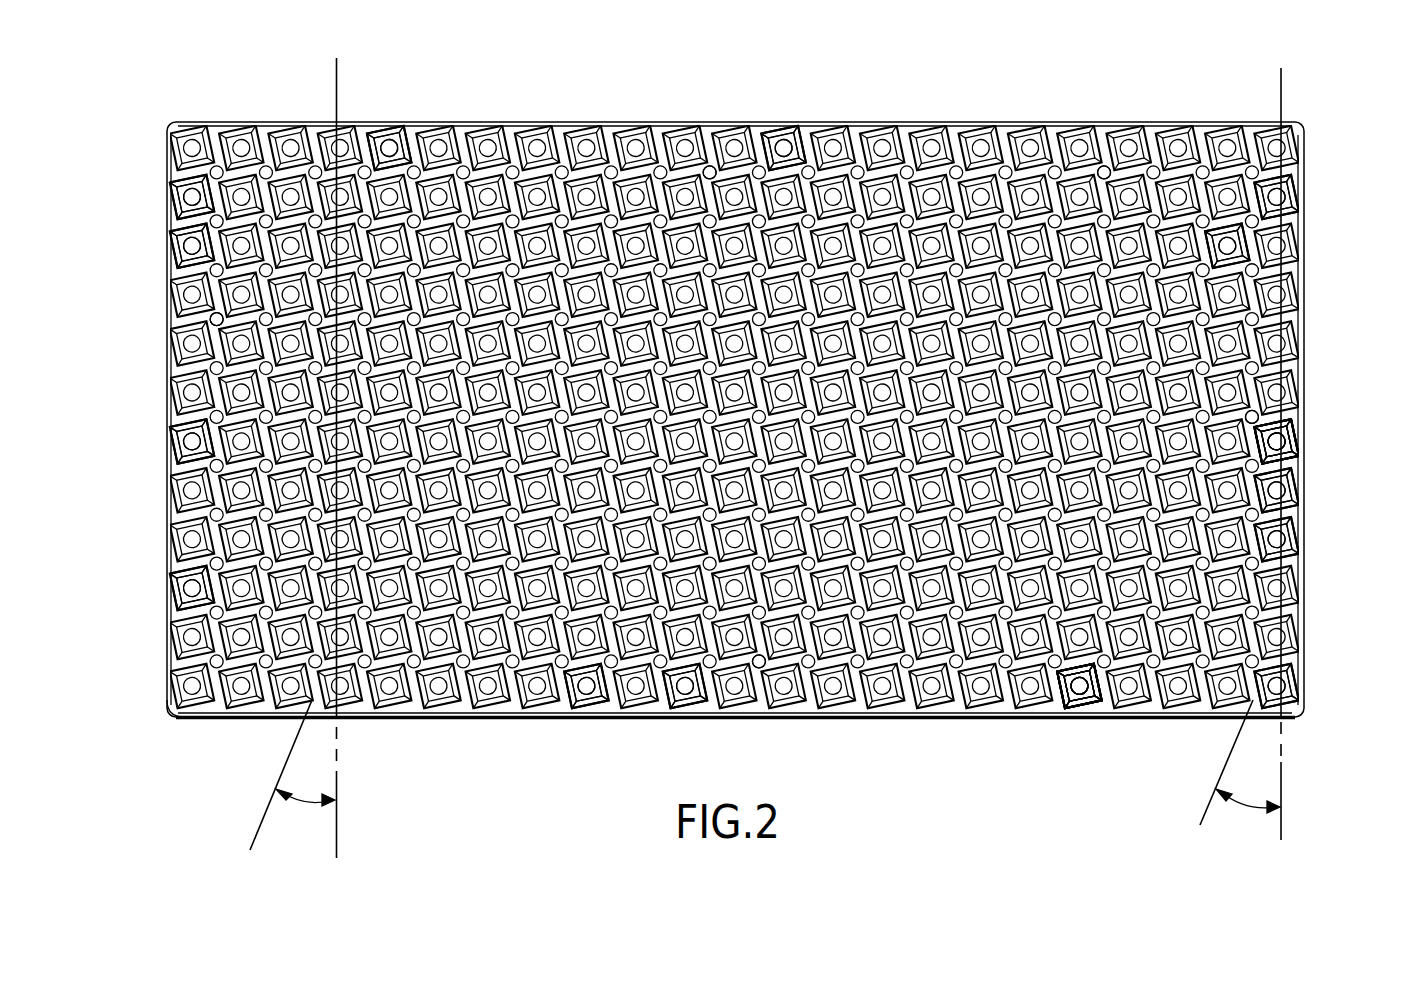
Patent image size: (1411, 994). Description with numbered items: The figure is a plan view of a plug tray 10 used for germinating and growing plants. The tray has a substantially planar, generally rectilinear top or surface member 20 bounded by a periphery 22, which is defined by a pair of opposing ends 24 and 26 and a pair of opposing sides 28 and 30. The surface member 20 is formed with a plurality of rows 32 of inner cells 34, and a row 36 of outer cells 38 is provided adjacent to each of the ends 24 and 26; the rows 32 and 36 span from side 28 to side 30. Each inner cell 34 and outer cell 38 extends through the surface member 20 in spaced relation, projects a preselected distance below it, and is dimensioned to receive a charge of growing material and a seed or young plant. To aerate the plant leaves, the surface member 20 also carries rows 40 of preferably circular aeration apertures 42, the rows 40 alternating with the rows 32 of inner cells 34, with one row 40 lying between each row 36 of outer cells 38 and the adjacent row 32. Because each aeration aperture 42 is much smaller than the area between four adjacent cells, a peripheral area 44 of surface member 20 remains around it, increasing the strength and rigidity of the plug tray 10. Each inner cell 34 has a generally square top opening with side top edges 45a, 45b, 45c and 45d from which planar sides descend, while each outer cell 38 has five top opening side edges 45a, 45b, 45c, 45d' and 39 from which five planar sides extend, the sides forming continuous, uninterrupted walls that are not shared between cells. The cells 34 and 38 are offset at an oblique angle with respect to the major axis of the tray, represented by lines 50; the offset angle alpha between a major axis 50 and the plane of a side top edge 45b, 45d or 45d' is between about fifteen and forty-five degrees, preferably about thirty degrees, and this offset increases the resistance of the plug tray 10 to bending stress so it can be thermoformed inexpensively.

The plug tray 10 is at (312, 104).
The surface member 20 is at (800, 135).
The periphery 22 is at (483, 718).
The end 24 is at (166, 385).
The end 26 is at (1305, 317).
The side 28 is at (917, 123).
The side 30 is at (865, 718).
The rows of inner cells 32 is at (473, 152).
The inner cell 34 is at (583, 700).
The row of outer cells 36 is at (192, 703).
The outer cell 38 is at (187, 193).
The top opening side edge 39 is at (177, 252).
The rows of aeration apertures 40 is at (755, 665).
The aeration aperture 42 is at (212, 323).
The peripheral area 44 is at (403, 167).
The side top edge 45a is at (1292, 432).
The side top edge 45b is at (1254, 421).
The side top edge 45c is at (1290, 495).
The side top edge 45d is at (1087, 760).
The top opening side edge 45d' is at (1313, 452).
The major axis line 50 is at (1283, 88).